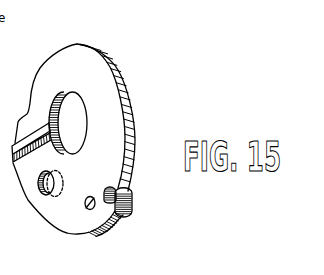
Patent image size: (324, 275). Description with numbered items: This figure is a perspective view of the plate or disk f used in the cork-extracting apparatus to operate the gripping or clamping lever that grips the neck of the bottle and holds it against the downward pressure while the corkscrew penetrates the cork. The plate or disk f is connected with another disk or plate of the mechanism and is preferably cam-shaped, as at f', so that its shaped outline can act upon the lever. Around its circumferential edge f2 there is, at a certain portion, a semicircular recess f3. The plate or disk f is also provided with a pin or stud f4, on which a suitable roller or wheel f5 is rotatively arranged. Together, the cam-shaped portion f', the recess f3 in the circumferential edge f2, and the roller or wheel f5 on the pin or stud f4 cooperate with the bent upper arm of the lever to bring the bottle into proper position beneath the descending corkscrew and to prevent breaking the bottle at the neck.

The plate or disk f is at (69, 139).
The cam-shaped portion f' is at (44, 103).
The circumferential edge f2 is at (136, 131).
The semicircular recess f3 is at (106, 190).
The pin or stud f4 is at (80, 205).
The roller or wheel f5 is at (131, 198).